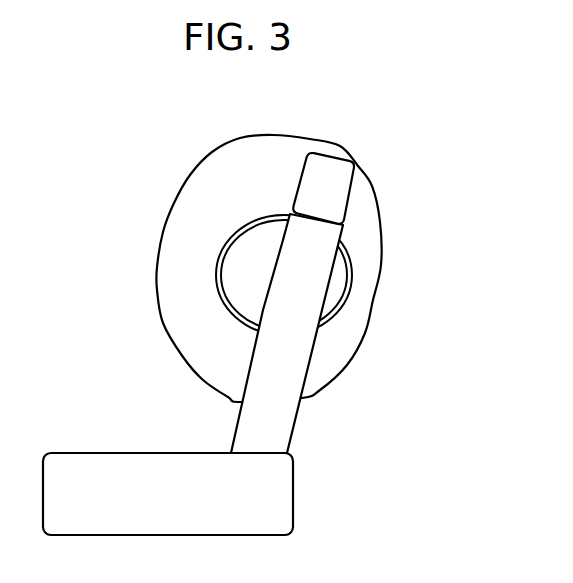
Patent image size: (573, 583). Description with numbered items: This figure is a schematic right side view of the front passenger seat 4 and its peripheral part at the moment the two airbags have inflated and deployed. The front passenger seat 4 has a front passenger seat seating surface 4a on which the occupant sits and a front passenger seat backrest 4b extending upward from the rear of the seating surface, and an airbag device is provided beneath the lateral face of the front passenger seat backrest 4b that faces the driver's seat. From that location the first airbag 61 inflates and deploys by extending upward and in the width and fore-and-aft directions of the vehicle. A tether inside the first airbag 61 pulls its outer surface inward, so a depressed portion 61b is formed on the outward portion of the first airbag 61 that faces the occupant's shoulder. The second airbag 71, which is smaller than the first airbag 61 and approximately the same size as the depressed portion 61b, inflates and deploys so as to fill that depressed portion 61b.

The front passenger seat 4 is at (380, 454).
The front passenger seat seating surface 4a is at (272, 495).
The front passenger seat backrest 4b is at (275, 420).
The first airbag 61 is at (363, 205).
The depressed portion 61b is at (217, 270).
The second airbag 71 is at (340, 283).